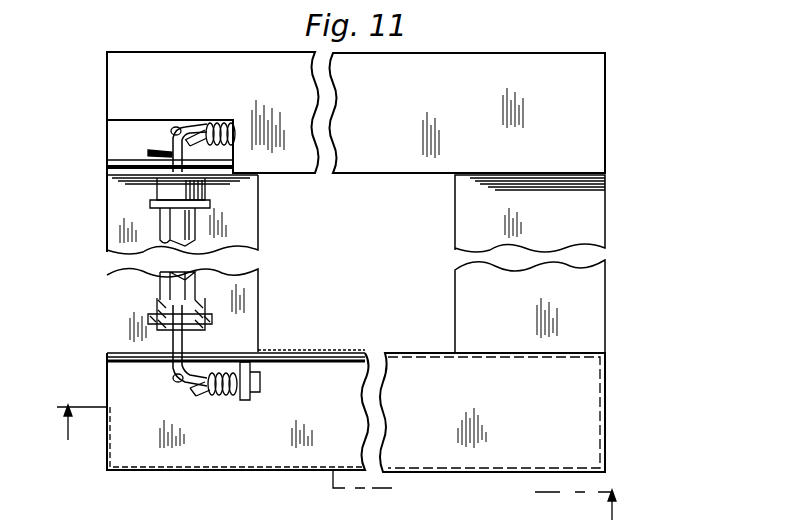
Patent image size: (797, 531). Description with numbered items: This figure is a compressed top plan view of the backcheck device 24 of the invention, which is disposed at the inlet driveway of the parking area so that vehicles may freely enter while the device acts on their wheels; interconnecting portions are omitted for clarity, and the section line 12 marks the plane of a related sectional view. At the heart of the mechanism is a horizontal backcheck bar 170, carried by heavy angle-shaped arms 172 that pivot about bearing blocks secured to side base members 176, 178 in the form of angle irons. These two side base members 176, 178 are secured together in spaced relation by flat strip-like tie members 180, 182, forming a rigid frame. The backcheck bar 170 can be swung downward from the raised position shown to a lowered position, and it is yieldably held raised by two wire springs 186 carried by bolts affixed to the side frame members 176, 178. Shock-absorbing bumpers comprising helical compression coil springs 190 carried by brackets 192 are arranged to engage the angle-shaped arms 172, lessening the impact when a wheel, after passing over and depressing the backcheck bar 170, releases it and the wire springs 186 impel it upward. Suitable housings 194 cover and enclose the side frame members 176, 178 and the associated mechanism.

The section line / modular unit 12 is at (339, 468).
The backcheck device 24 is at (630, 103).
The backcheck bar 170 is at (168, 215).
The angle-shaped arms 172 is at (172, 145).
The side base member 176 is at (122, 161).
The side base member 178 is at (120, 360).
The tie member 180 is at (247, 223).
The tie member 182 is at (456, 210).
The wire springs 186 is at (197, 128).
The helical compression coil springs 190 is at (223, 123).
The brackets 192 is at (248, 402).
The housings 194 is at (575, 64).